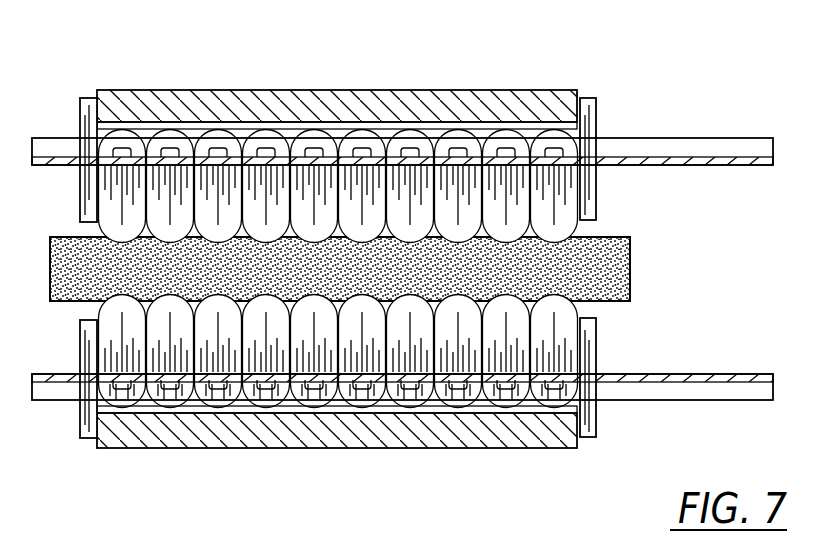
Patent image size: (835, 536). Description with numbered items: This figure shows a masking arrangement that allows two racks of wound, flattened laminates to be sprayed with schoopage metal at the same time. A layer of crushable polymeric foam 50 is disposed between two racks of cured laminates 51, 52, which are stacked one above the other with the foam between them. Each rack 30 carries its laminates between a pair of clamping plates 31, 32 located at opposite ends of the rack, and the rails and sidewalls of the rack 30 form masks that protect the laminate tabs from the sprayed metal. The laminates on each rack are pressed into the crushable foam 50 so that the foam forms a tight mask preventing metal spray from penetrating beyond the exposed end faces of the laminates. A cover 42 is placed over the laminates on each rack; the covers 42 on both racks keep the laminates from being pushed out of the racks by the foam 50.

The rack 30 is at (724, 112).
The clamping plate 31 is at (588, 98).
The clamping plate 32 is at (82, 97).
The cover 42 is at (228, 90).
The crushable polymeric foam 50 is at (630, 262).
The rack of cured laminates 51 is at (764, 215).
The rack of cured laminates 52 is at (758, 446).